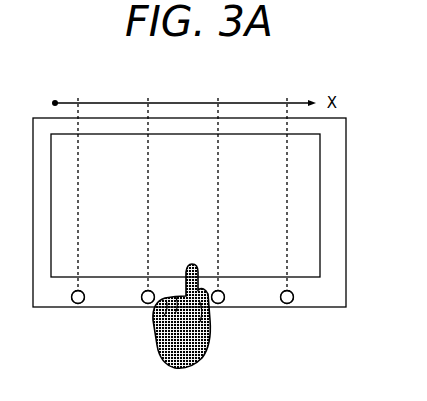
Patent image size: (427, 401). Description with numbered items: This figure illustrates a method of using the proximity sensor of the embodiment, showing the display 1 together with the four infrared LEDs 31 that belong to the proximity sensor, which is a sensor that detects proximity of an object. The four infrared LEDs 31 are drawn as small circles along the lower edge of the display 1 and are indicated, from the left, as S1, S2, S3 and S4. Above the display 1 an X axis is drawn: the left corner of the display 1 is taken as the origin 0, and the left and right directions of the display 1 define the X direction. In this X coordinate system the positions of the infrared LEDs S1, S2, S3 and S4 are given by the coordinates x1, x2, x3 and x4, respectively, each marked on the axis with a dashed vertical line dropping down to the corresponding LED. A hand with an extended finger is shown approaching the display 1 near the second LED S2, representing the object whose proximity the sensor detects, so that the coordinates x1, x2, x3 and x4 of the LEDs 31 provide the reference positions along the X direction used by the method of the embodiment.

The display 1 is at (310, 197).
The infrared LEDs 31 is at (72, 301).
The origin 0 is at (53, 95).
The coordinate of S1 x1 is at (79, 180).
The coordinate of S2 x2 is at (148, 180).
The coordinate of S3 x3 is at (221, 180).
The coordinate of S4 x4 is at (293, 180).
The first infrared LED S1 is at (91, 292).
The second infrared LED S2 is at (161, 292).
The third infrared LED S3 is at (231, 292).
The fourth infrared LED S4 is at (300, 292).